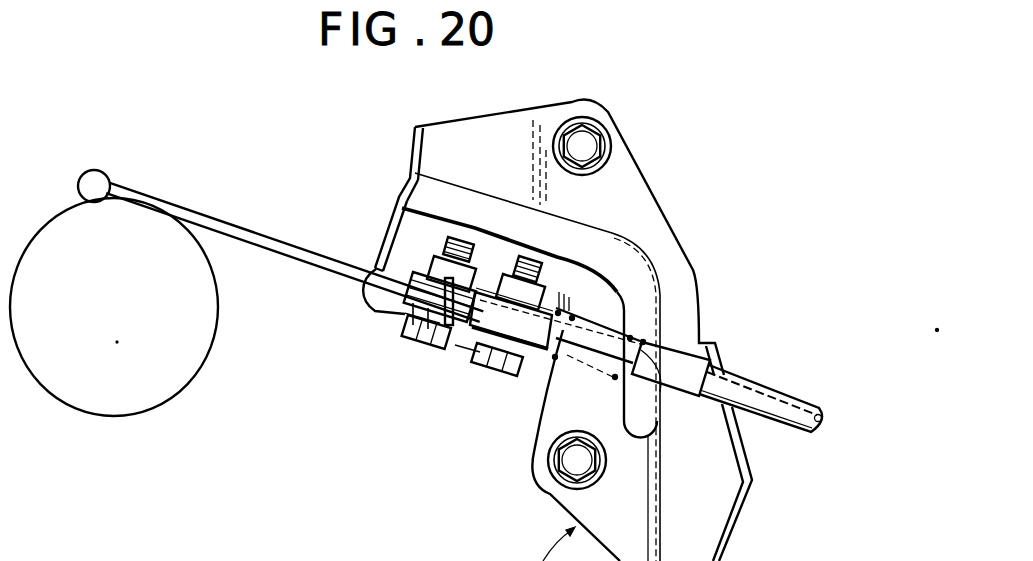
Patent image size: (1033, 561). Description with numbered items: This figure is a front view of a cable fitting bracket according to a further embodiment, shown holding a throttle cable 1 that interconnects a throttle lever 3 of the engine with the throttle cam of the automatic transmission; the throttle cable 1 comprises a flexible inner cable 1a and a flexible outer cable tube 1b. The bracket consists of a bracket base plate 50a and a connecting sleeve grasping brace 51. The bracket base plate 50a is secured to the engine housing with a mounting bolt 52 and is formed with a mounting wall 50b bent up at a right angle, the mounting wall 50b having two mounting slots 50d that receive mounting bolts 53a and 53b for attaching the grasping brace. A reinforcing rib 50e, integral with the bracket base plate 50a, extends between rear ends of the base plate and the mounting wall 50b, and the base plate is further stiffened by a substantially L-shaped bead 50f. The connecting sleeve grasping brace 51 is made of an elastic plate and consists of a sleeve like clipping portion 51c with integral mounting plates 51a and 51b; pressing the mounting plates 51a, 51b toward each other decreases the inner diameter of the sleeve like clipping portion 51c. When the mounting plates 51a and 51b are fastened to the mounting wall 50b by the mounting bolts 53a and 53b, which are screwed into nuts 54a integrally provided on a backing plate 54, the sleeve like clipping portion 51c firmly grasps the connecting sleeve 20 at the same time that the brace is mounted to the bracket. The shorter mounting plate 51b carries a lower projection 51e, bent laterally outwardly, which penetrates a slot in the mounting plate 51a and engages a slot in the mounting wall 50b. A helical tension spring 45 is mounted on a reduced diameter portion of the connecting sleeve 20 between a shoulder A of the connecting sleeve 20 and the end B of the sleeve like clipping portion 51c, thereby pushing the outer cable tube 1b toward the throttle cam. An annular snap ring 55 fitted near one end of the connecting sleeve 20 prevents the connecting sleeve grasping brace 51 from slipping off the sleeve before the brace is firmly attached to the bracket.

The throttle cable 1 is at (773, 382).
The flexible inner cable 1a is at (237, 227).
The flexible outer cable tube 1b is at (803, 400).
The throttle lever 3 is at (207, 353).
The connecting sleeve 20 is at (678, 362).
The helical tension spring 45 is at (636, 331).
The bracket base plate 50a is at (492, 140).
The mounting wall 50b is at (405, 307).
The mounting slots 50d is at (413, 316).
The reinforcing rib 50e is at (390, 220).
The L-shaped bead 50f is at (640, 275).
The connecting sleeve grasping brace 51 is at (558, 298).
The mounting plate 51a is at (372, 292).
The mounting plate 51b is at (417, 268).
The sleeve like clipping portion 51c is at (488, 283).
The lower projection 51e is at (468, 352).
The mounting bolt 52 is at (585, 143).
The mounting bolt 53a is at (428, 350).
The mounting bolt 53b is at (503, 376).
The backing plate 54 is at (410, 186).
The nuts 54a is at (455, 236).
The annular snap ring 55 is at (443, 350).
The shoulder A is at (663, 382).
The end of the sleeve like clipping portion B is at (556, 358).